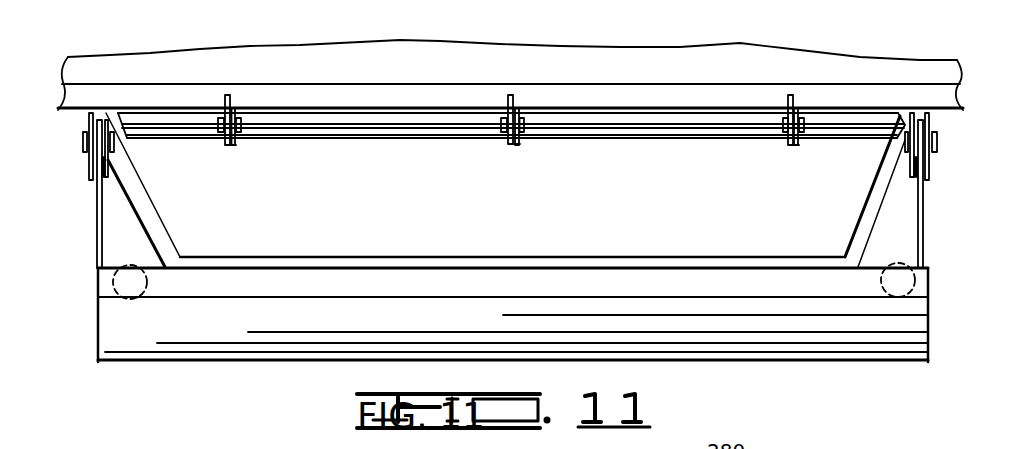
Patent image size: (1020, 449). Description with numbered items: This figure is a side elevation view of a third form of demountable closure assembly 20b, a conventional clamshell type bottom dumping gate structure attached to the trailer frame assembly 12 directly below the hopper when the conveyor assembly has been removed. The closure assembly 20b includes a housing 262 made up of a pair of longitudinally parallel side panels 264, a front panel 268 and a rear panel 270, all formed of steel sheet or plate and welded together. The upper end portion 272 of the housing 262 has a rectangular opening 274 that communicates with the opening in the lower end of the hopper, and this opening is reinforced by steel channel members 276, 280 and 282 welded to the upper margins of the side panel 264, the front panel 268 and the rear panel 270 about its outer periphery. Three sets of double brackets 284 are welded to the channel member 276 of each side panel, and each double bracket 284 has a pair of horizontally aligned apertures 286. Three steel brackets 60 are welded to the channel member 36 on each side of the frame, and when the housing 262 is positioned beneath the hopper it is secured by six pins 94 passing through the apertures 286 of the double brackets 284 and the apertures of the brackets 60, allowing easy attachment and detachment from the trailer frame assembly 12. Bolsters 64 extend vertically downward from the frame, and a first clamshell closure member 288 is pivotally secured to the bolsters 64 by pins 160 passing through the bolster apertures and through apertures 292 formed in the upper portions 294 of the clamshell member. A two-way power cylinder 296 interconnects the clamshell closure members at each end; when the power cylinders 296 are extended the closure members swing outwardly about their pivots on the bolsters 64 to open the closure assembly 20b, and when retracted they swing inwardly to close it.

The trailer frame assembly 12 is at (942, 25).
The demountable closure assembly 20b is at (856, 87).
The channel member 36 is at (447, 97).
The bracket 60 is at (226, 96).
The bolster 64 is at (85, 122).
The pin 94 is at (234, 112).
The pin 160 is at (88, 148).
The housing 262 is at (383, 240).
The side panel 264 is at (388, 147).
The front panel 268 is at (150, 200).
The rear panel 270 is at (864, 200).
The upper end portion 272 is at (342, 143).
The rectangular opening 274 is at (663, 110).
The steel channel member 276 is at (540, 130).
The steel channel member 280 is at (115, 130).
The steel channel member 282 is at (922, 135).
The double bracket 284 is at (234, 147).
The aperture 286 is at (218, 134).
The first clamshell closure member 288 is at (517, 278).
The aperture 292 is at (110, 113).
The upper portion 294 is at (102, 142).
The two-way power cylinder 296 is at (122, 292).